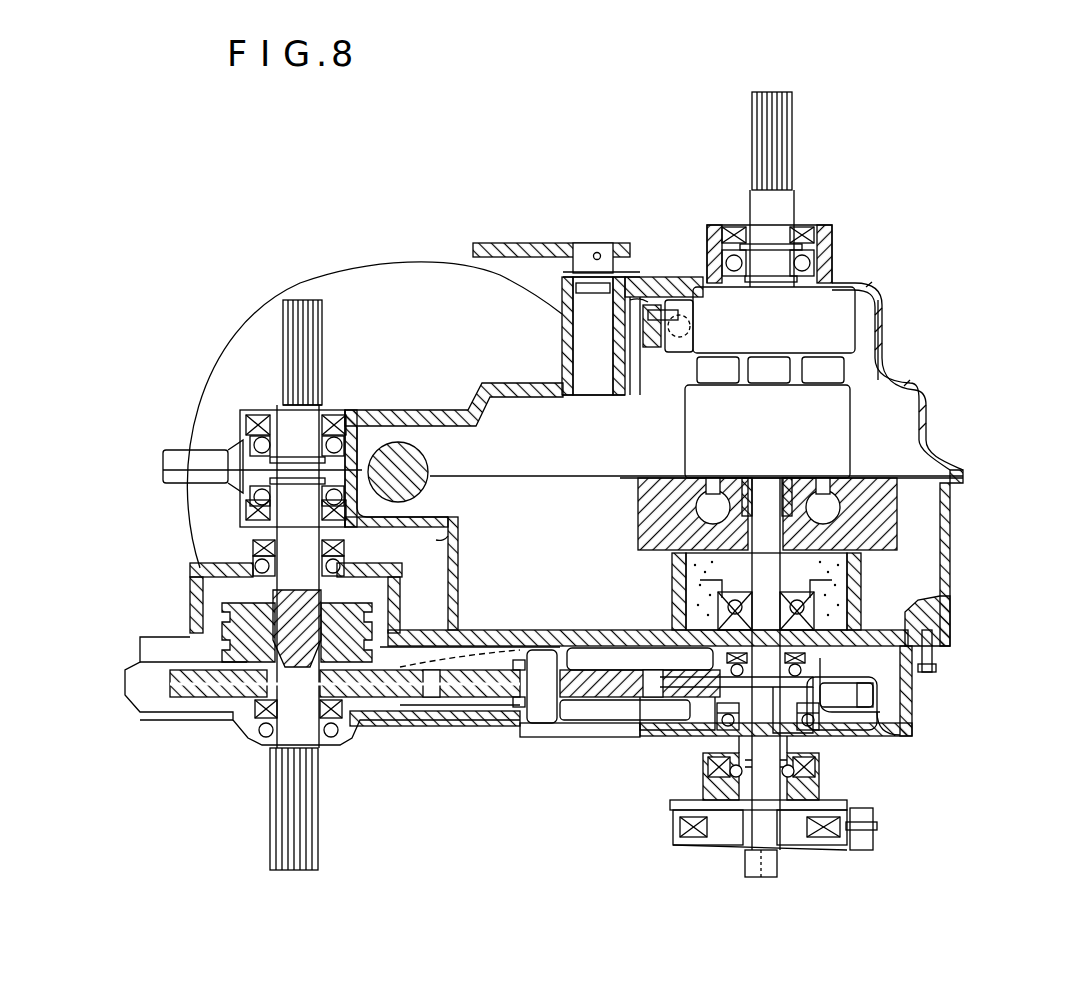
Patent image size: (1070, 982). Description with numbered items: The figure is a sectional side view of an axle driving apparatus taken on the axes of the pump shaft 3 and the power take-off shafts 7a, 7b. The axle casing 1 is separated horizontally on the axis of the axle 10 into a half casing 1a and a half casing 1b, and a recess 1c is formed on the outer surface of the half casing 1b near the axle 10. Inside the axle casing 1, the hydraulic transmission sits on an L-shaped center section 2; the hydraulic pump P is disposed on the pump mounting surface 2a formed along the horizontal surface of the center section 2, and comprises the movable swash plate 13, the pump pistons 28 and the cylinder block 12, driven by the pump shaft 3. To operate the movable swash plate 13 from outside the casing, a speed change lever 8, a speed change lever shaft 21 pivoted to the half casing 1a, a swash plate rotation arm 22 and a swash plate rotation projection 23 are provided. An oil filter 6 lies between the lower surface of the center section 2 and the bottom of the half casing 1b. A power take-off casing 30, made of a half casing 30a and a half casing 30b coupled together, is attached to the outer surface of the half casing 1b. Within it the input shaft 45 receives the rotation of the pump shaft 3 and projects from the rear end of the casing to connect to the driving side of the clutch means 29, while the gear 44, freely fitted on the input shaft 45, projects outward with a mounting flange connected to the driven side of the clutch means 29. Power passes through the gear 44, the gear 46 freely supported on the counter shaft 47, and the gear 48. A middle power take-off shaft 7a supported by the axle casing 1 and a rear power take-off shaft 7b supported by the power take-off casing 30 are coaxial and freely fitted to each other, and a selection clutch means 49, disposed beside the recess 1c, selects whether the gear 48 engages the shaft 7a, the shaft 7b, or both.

The axle casing 1 is at (452, 246).
The half casing 1a is at (447, 408).
The half casing 1b is at (952, 535).
The recess 1c is at (450, 540).
The center section 2 is at (638, 516).
The pump mounting surface 2a is at (860, 478).
The pump shaft 3 is at (795, 152).
The oil filter 6 is at (665, 608).
The middle power take-off shaft 7a is at (322, 367).
The rear power take-off shaft 7b is at (320, 764).
The speed change lever 8 is at (548, 243).
The axle 10 is at (426, 463).
The cylinder block 12 is at (767, 432).
The movable swash plate 13 is at (774, 335).
The speed change lever shaft 21 is at (585, 336).
The swash plate rotation arm 22 is at (652, 395).
The swash plate rotation projection 23 is at (632, 300).
The pump pistons 28 is at (878, 373).
The hydraulic pump P is at (905, 384).
The clutch means 29 is at (882, 812).
The power take-off casing 30 is at (493, 736).
The half casing 30a is at (905, 682).
The half casing 30b is at (905, 730).
The gear 44 is at (890, 698).
The input shaft 45 is at (675, 732).
The gear 46 is at (642, 730).
The counter shaft 47 is at (516, 728).
The gear 48 is at (200, 722).
The selection clutch means 49 is at (236, 590).